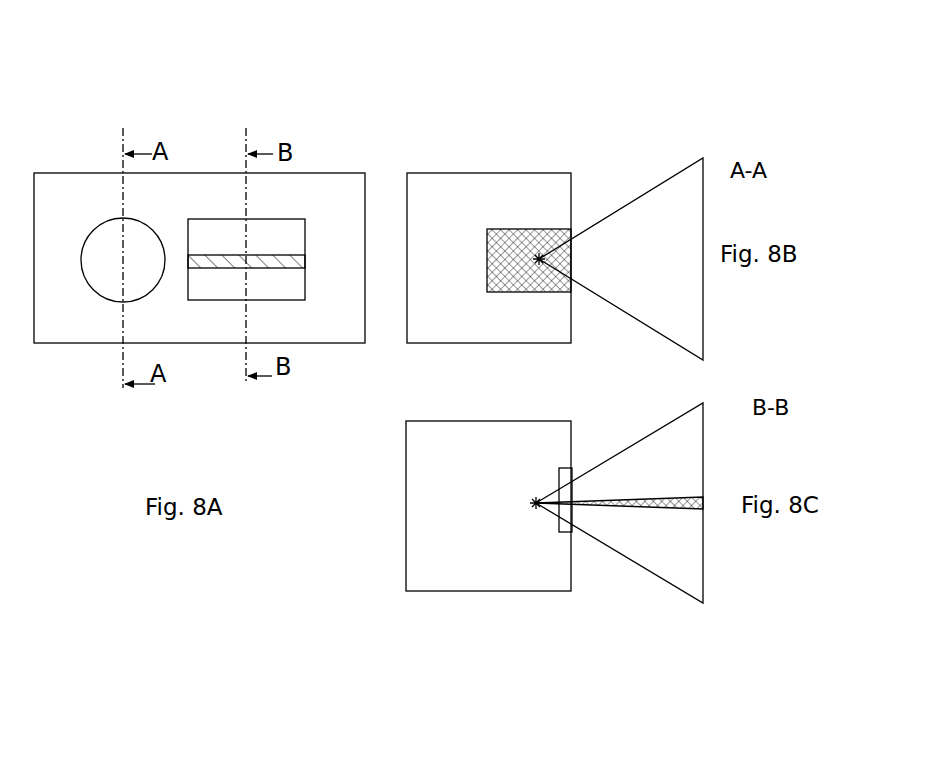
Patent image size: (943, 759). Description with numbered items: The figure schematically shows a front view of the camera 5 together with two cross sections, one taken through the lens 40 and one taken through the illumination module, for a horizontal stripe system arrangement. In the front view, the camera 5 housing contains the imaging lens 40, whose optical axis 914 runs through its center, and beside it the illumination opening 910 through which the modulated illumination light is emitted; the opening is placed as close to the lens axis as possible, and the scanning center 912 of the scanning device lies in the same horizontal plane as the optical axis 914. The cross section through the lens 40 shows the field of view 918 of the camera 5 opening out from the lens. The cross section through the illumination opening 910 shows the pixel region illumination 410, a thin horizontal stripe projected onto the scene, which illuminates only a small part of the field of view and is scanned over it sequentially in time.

In FIG. 8A, the camera 5 is at (200, 171).
In FIG. 8B, the camera 5 is at (490, 172).
In FIG. 8C, the camera 5 is at (476, 420).
In FIG. 8A, the lens 40 is at (80, 259).
In FIG. 8B, the lens 40 is at (578, 228).
In FIG. 8A, the illumination opening 910 is at (247, 217).
In FIG. 8C, the illumination opening 910 is at (574, 467).
In FIG. 8A, the optical axis 914 is at (121, 261).
In FIG. 8A, the scanning center 912 is at (246, 270).
In FIG. 8B, the field of view 918 is at (656, 178).
In FIG. 8C, the pixel region illumination 410 is at (662, 512).